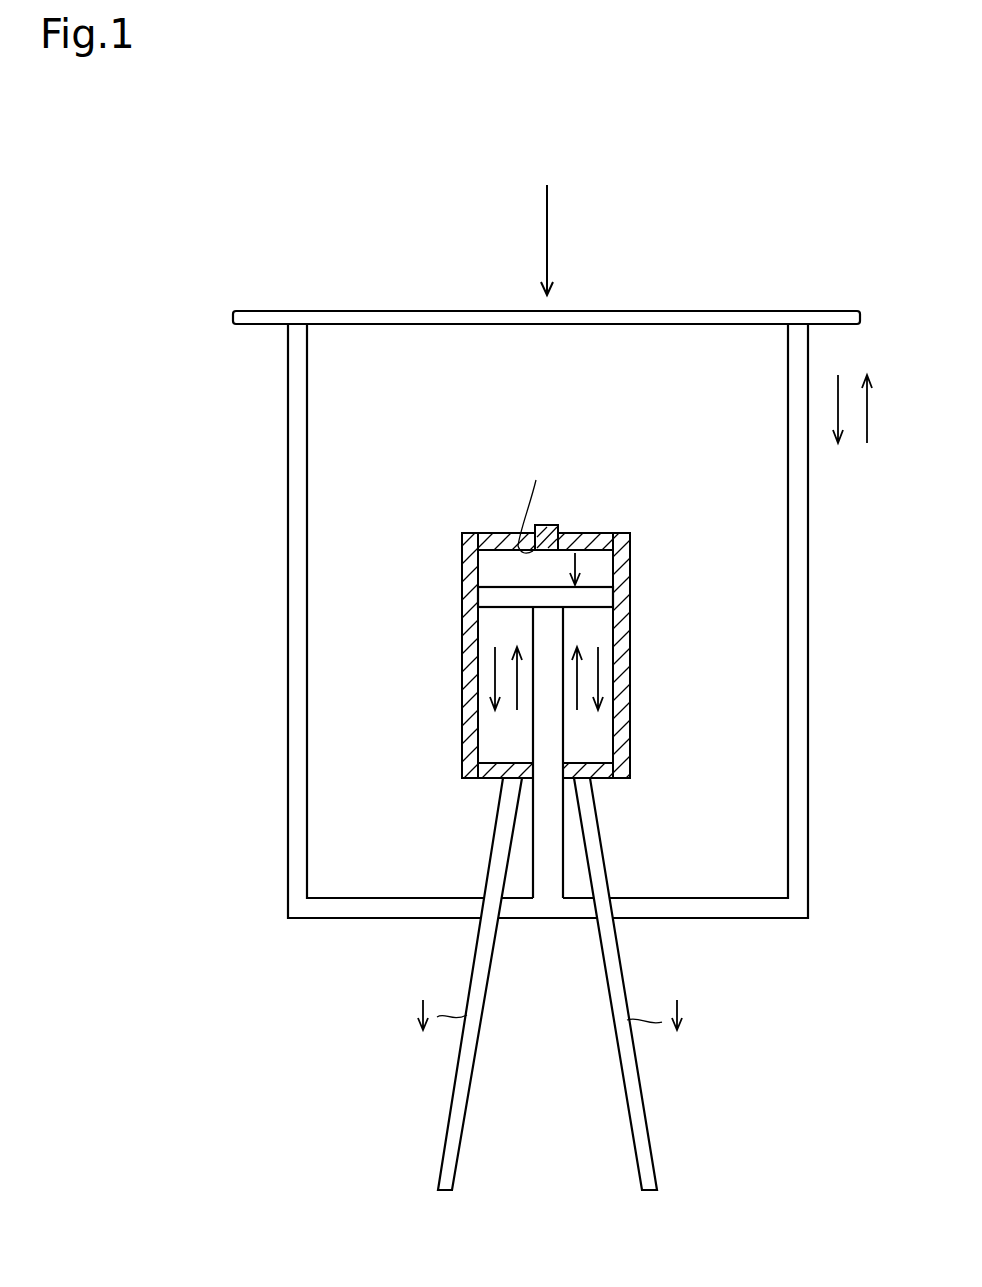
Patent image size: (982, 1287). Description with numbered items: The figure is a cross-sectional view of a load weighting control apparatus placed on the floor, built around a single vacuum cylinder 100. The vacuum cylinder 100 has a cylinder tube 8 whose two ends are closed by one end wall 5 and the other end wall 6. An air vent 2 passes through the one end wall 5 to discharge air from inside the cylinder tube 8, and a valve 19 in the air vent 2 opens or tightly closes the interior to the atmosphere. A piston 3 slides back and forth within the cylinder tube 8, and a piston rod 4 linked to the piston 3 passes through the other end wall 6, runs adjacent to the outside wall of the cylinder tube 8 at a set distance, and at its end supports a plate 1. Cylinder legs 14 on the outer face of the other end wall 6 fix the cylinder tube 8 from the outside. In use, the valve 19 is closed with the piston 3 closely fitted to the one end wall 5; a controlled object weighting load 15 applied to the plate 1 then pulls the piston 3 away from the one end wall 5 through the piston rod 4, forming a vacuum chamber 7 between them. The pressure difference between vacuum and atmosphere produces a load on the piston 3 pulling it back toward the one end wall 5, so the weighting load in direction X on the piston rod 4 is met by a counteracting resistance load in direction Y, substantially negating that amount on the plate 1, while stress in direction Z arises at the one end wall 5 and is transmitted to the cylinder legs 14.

The plate 1 is at (705, 318).
The air vent 2 is at (533, 495).
The piston 3 is at (585, 592).
The piston rod 4 is at (300, 872).
The one end wall 5 is at (497, 540).
The other end wall 6 is at (590, 765).
The vacuum chamber 7 is at (500, 577).
The cylinder tube 8 is at (468, 712).
The cylinder legs 14 is at (456, 1100).
The controlled object weighting load 15 is at (565, 240).
The valve 19 is at (556, 524).
The vacuum cylinder 100 is at (633, 522).